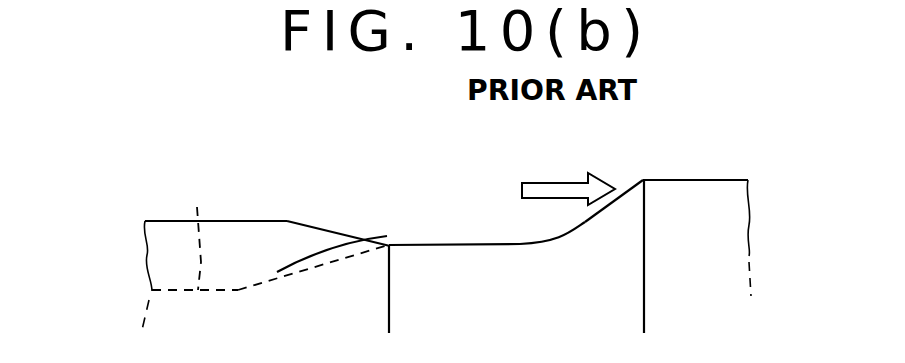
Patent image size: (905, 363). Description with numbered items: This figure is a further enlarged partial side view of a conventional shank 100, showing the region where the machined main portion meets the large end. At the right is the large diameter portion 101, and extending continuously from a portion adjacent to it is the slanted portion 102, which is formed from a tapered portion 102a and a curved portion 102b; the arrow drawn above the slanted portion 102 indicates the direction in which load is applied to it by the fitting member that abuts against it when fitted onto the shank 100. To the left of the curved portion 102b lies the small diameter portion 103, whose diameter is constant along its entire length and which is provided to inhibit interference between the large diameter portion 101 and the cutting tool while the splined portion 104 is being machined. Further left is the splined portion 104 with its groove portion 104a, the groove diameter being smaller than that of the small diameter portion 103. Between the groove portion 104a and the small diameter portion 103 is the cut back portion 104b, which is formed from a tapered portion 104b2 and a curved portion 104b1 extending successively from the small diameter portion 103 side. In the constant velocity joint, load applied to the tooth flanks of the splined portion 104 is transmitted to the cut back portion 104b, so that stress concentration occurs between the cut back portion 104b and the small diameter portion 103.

The shank 100 is at (456, 203).
The large diameter portion 101 is at (678, 180).
The slanted portion 102 is at (581, 256).
The tapered portion 102a is at (643, 192).
The curved portion 102b is at (578, 235).
The small diameter portion 103 is at (522, 248).
The splined portion 104 is at (160, 221).
The groove portion 104a is at (205, 236).
The cut back portion 104b is at (338, 188).
The curved portion 104b1 is at (276, 273).
The tapered portion 104b2 is at (331, 251).